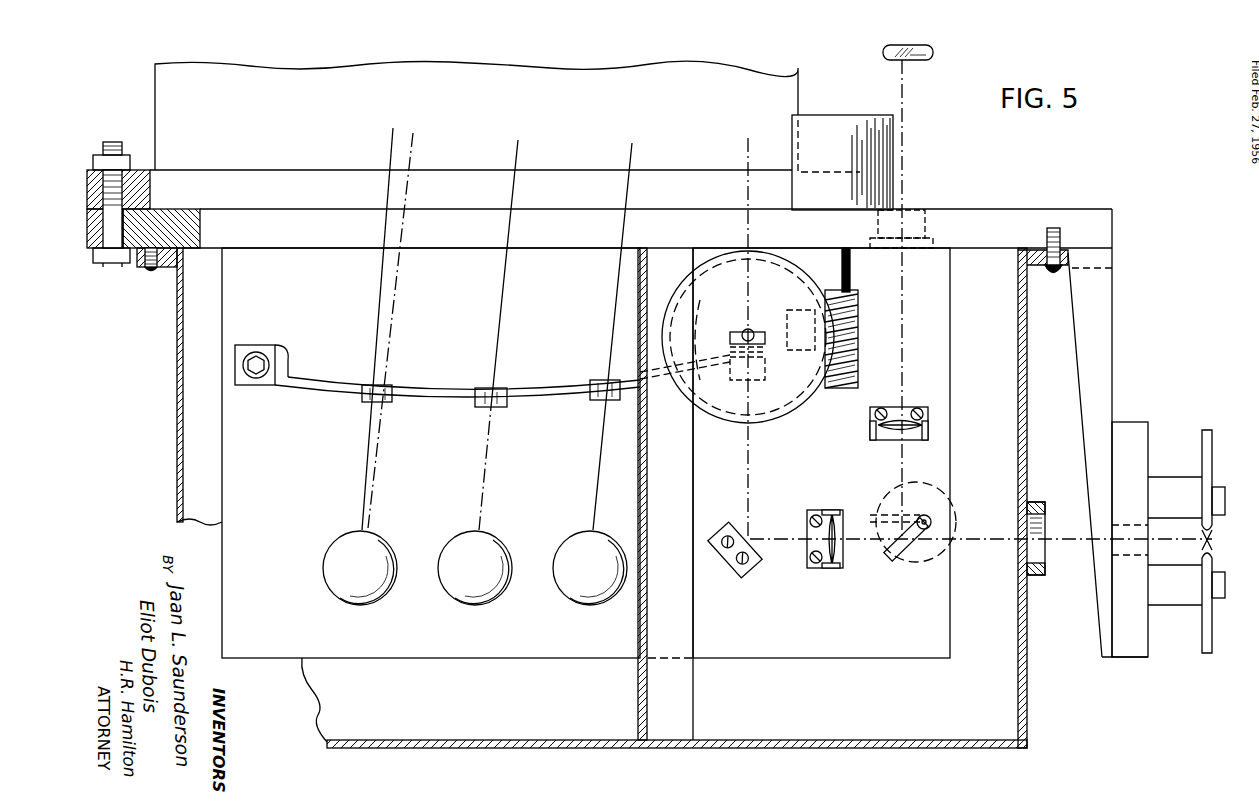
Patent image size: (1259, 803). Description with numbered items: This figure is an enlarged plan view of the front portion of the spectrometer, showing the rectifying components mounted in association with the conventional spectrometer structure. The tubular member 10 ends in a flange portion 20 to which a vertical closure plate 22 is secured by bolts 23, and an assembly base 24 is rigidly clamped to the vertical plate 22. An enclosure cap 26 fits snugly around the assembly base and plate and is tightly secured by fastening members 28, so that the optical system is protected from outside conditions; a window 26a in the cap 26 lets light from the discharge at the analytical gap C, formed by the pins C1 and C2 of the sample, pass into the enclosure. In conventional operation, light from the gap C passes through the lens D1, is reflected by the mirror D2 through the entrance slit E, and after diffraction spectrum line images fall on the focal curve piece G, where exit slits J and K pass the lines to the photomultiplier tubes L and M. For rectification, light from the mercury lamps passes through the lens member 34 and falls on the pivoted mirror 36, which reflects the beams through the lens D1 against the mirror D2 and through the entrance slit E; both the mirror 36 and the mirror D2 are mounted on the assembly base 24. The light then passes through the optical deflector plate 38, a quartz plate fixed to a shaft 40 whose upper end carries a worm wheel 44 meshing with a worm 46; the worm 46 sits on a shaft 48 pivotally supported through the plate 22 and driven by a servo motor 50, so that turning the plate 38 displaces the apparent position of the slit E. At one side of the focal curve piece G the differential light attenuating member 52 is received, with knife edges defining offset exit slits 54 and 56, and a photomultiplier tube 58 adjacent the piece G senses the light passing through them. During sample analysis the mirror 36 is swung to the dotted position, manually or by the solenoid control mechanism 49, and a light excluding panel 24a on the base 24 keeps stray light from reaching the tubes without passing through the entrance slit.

The tubular member 10 is at (155, 93).
The flange portion 20 is at (138, 170).
The vertical closure plate 22 is at (135, 240).
The bolts 23 is at (112, 258).
The fastening members 28 is at (150, 268).
The assembly base 24 is at (232, 572).
The light excluding panel 24a is at (693, 510).
The enclosure cap 26 is at (1030, 662).
The window 26a is at (1035, 502).
The lens member 34 is at (905, 410).
The pivoted mirror 36 is at (893, 562).
The optical deflector plate 38 is at (760, 331).
The shaft 40 is at (742, 333).
The worm wheel 44 is at (790, 276).
The worm 46 is at (858, 300).
The shaft 48 is at (852, 270).
The solenoid control mechanism 49 is at (958, 520).
The servo motor 50 is at (838, 120).
The differential light attenuating member 52 is at (394, 390).
The exit slit 54 is at (352, 397).
The exit slit 56 is at (388, 400).
The photomultiplier tube 58 is at (370, 548).
The analytical gap C is at (1215, 545).
The pin C1 is at (1214, 465).
The pin C2 is at (1214, 618).
The lens D1 is at (840, 515).
The mirror D2 is at (760, 560).
The entrance slit E is at (772, 405).
The focal curve piece G is at (656, 395).
The exit slit J is at (505, 408).
The exit slit K is at (598, 400).
The photomultiplier tube L is at (475, 590).
The photomultiplier tube M is at (592, 590).